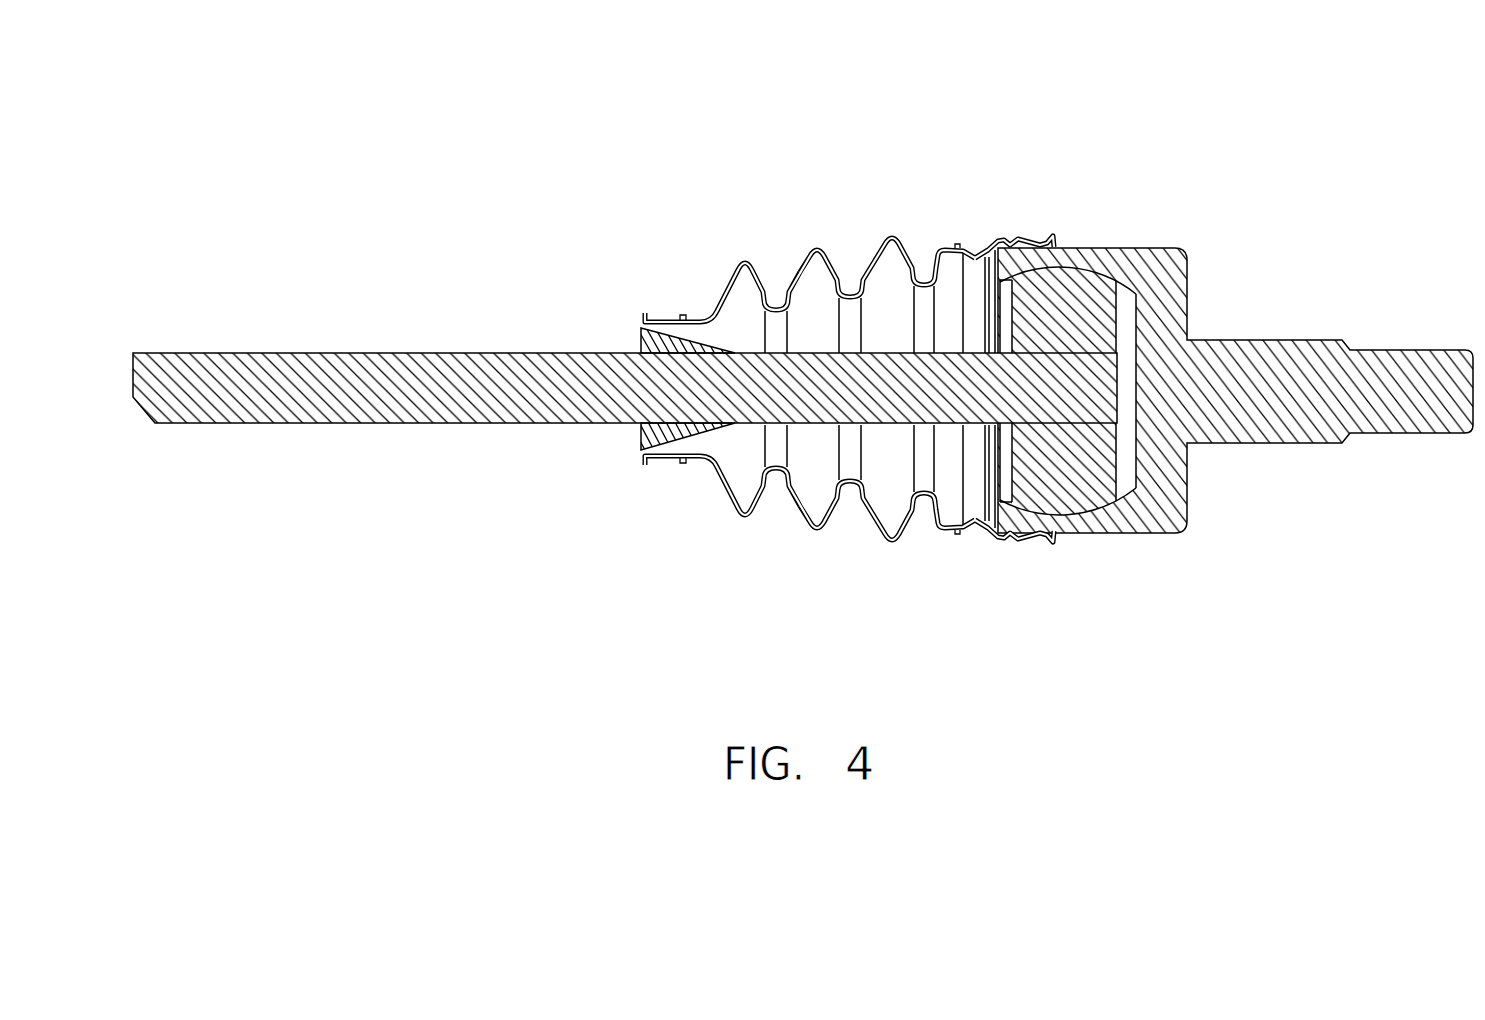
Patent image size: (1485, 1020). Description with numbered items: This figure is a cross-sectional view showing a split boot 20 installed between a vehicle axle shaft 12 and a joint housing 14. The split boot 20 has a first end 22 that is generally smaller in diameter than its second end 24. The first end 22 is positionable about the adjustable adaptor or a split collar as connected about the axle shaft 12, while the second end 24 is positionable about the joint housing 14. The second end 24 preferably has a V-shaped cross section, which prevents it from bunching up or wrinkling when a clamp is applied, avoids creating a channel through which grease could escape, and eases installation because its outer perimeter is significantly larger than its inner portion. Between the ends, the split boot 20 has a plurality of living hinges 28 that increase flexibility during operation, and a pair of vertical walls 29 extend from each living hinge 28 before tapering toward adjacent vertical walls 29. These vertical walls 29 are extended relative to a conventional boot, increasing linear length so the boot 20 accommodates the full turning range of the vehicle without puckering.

The axle shaft 12 is at (313, 383).
The joint housing 14 is at (1165, 273).
The split boot 20 is at (892, 233).
The first end 22 is at (650, 319).
The second end 24 is at (1022, 240).
The living hinges 28 is at (775, 306).
The vertical walls 29 is at (768, 488).